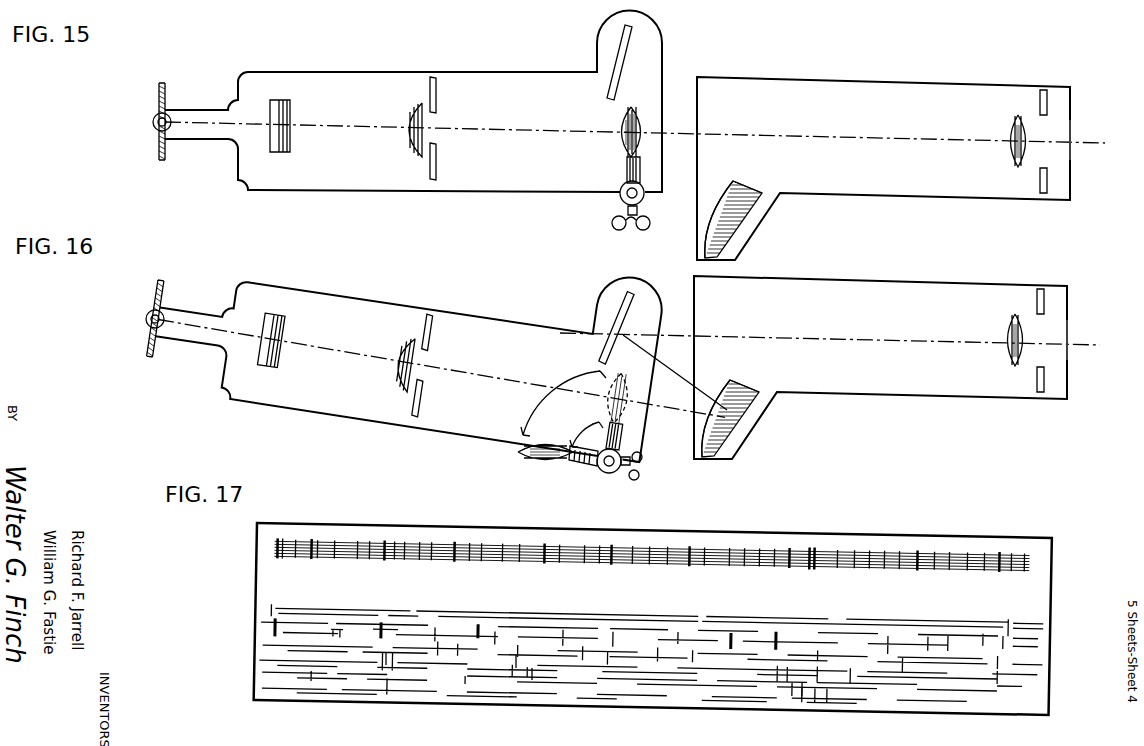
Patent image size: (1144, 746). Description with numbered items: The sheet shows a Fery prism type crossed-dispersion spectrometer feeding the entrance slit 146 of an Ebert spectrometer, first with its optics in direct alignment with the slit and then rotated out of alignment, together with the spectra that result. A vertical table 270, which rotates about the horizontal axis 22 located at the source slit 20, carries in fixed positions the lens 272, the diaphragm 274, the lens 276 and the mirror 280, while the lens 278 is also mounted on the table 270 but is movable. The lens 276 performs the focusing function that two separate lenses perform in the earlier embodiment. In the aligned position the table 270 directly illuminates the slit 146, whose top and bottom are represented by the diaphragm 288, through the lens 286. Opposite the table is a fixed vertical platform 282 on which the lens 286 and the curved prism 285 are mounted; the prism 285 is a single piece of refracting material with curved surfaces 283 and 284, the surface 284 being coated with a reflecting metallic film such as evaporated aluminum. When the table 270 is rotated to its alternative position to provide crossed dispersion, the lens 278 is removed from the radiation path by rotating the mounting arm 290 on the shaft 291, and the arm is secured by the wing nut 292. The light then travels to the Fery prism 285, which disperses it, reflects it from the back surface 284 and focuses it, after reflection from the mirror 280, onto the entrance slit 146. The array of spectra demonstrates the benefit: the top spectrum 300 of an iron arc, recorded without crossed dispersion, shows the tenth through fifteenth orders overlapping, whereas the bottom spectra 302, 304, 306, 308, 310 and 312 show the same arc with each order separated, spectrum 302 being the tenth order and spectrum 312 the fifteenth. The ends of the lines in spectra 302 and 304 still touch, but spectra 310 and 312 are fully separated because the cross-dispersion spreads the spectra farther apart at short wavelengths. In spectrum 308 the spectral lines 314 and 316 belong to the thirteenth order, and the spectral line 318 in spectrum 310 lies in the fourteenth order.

In FIG. 15, the entrance slit 20 is at (167, 88).
In FIG. 16, the entrance slit 20 is at (163, 298).
In FIG. 15, the horizontal axis 22 is at (157, 132).
In FIG. 16, the horizontal axis 22 is at (150, 325).
In FIG. 15, the entrance slit 146 is at (1045, 132).
In FIG. 16, the entrance slit 146 is at (1040, 333).
In FIG. 15, the vertical table 270 is at (352, 72).
In FIG. 16, the vertical table 270 is at (355, 297).
In FIG. 15, the lens 272 is at (283, 100).
In FIG. 16, the lens 272 is at (277, 318).
In FIG. 15, the diaphragm 274 is at (436, 80).
In FIG. 16, the diaphragm 274 is at (432, 327).
In FIG. 15, the lens 276 is at (405, 105).
In FIG. 16, the lens 276 is at (400, 340).
In FIG. 15, the lens 278 is at (642, 108).
In FIG. 16, the lens 278 is at (550, 466).
In FIG. 15, the mirror 280 is at (615, 45).
In FIG. 16, the mirror 280 is at (618, 320).
In FIG. 15, the vertical platform 282 is at (832, 78).
In FIG. 16, the vertical platform 282 is at (855, 276).
In FIG. 15, the curved surface 283 is at (727, 206).
In FIG. 16, the curved surface 283 is at (727, 398).
In FIG. 15, the curved surface 284 is at (753, 210).
In FIG. 16, the curved surface 284 is at (745, 410).
In FIG. 15, the curved prism 285 is at (752, 192).
In FIG. 16, the curved prism 285 is at (747, 390).
In FIG. 15, the lens 286 is at (1012, 125).
In FIG. 16, the lens 286 is at (1010, 325).
In FIG. 15, the diaphragm 288 is at (1047, 90).
In FIG. 16, the diaphragm 288 is at (1042, 289).
In FIG. 15, the mounting arm 290 is at (626, 170).
In FIG. 16, the mounting arm 290 is at (598, 472).
In FIG. 15, the shaft 291 is at (620, 197).
In FIG. 16, the shaft 291 is at (620, 452).
In FIG. 15, the wing nut 292 is at (612, 222).
In FIG. 16, the wing nut 292 is at (641, 477).
In FIG. 17, the top spectrum 300 is at (252, 551).
In FIG. 17, the spectrum 302 is at (257, 613).
In FIG. 17, the spectrum 304 is at (263, 632).
In FIG. 17, the spectrum 306 is at (257, 648).
In FIG. 17, the spectrum 308 is at (257, 662).
In FIG. 17, the spectrum 310 is at (257, 675).
In FIG. 17, the spectrum 312 is at (257, 688).
In FIG. 17, the spectral line 314 is at (386, 655).
In FIG. 17, the spectral line 316 is at (516, 657).
In FIG. 17, the spectral line 318 is at (533, 670).